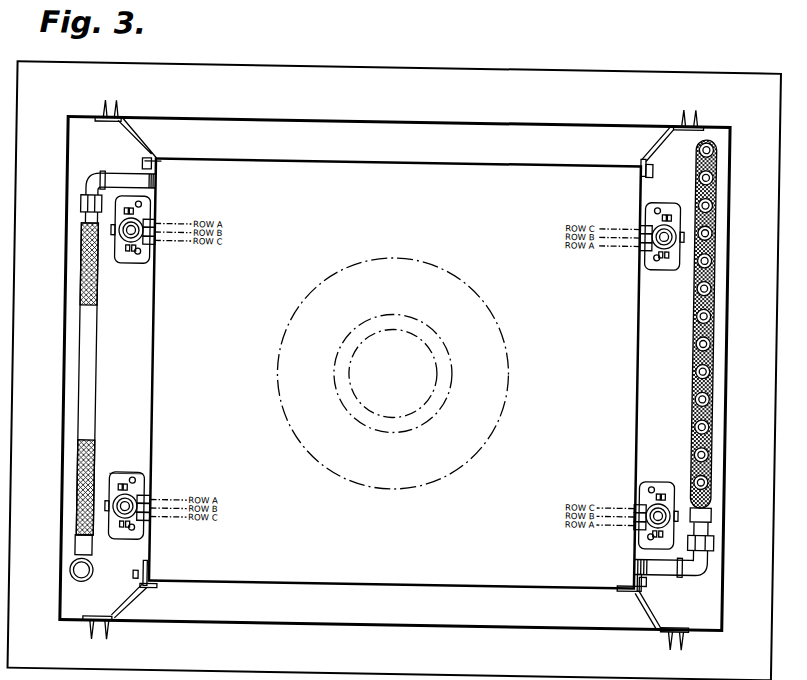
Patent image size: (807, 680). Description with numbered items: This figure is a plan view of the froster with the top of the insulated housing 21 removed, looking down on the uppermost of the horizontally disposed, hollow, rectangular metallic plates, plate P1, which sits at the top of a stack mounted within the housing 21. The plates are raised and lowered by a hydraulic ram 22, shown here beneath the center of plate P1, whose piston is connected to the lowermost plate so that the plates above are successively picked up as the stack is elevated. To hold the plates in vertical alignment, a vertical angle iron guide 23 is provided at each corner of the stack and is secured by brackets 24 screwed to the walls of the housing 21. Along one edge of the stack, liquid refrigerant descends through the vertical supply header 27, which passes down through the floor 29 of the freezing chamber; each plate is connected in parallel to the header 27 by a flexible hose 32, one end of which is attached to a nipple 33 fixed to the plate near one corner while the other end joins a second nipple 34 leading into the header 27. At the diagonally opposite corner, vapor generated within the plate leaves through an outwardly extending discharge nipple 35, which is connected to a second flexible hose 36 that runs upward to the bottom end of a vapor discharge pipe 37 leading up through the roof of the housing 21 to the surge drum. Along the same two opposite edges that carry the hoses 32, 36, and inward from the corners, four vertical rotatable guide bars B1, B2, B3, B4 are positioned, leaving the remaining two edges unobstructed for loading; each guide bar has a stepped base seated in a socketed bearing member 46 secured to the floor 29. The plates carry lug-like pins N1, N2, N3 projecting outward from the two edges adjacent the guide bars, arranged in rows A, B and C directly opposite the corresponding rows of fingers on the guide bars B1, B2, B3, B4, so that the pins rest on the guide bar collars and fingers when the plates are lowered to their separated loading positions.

The insulated housing 21 is at (432, 80).
The hydraulic ram 22 is at (424, 390).
The vertical angle iron guide 23 is at (159, 160).
The brackets 24 is at (131, 144).
The vertical supply header 27 is at (76, 576).
The floor 29 is at (250, 609).
The flexible conduits or hoses 32 is at (85, 384).
The nipple 33 is at (95, 188).
The second nipple 34 is at (81, 554).
The discharge nipple 35 is at (696, 564).
The second flexible conduit or hose 36 is at (708, 492).
The vapor discharge pipe 37 is at (714, 414).
The socketed bearing member 46 is at (127, 486).
The guide bar B1 is at (122, 256).
The guide bar B2 is at (123, 536).
The guide bar B3 is at (661, 483).
The guide bar B4 is at (662, 208).
The plate pins N1 is at (145, 240).
The plate pins N2 is at (148, 231).
The plate pins N3 is at (148, 245).
The plate P1 is at (354, 172).